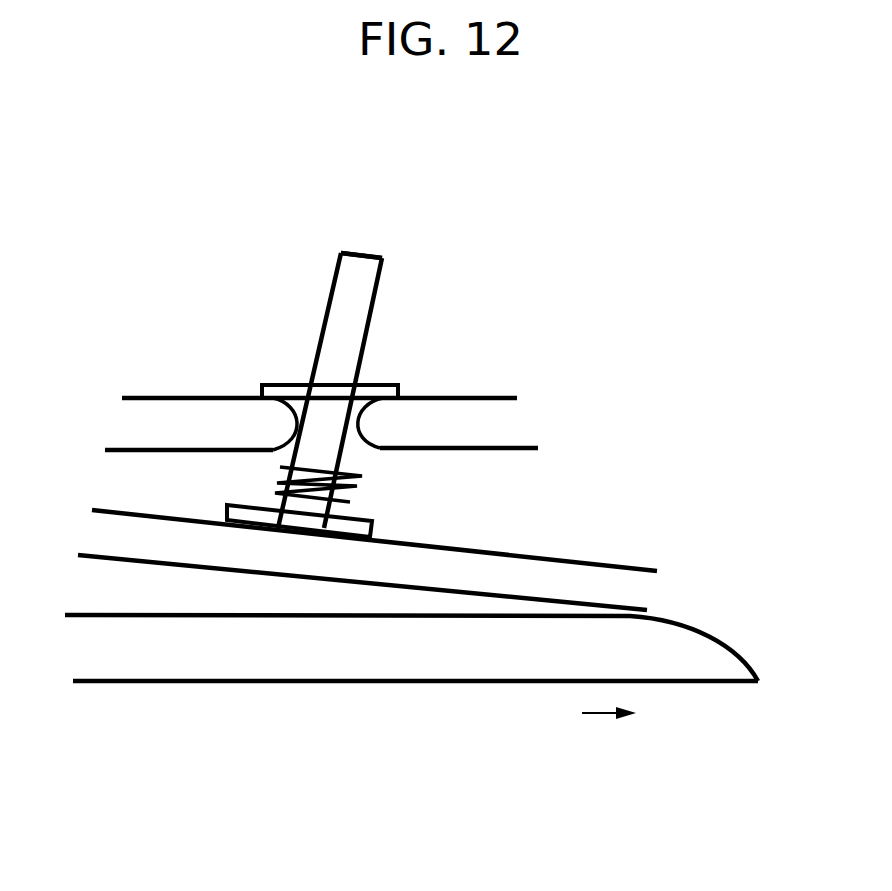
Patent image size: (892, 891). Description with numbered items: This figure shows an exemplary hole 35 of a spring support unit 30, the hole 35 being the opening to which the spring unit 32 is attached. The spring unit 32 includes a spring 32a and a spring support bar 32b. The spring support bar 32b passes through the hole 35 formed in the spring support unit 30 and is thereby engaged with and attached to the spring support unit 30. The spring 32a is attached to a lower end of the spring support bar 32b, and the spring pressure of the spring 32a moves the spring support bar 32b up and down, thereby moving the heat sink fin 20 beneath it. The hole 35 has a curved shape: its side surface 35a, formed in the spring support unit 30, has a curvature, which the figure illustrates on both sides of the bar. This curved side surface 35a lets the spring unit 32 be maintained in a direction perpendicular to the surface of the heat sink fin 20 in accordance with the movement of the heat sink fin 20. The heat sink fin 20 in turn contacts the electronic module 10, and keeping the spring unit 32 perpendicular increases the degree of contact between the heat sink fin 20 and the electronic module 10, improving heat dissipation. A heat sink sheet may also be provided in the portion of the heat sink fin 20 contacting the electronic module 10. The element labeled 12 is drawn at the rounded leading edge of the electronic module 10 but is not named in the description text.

The electronic module 10 is at (478, 687).
The leading edge of sheet 12 is at (703, 627).
The heat sink fin 20 is at (613, 563).
The spring support unit 30 is at (505, 393).
The spring unit 32 is at (471, 230).
The spring 32a is at (370, 485).
The spring support bar 32b is at (333, 273).
The hole 35 is at (276, 353).
The side surface of the hole 35a is at (297, 430).